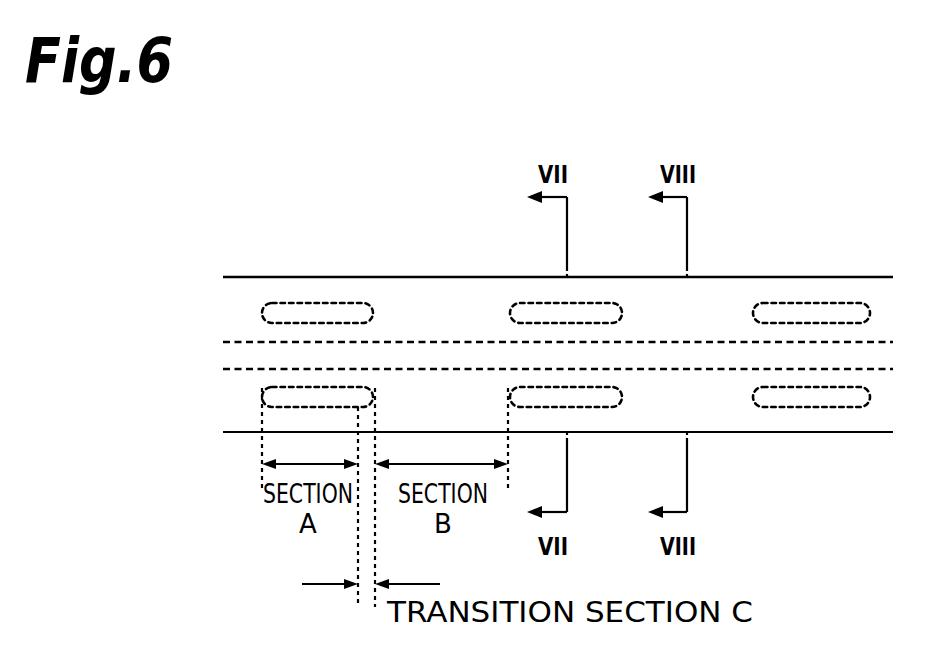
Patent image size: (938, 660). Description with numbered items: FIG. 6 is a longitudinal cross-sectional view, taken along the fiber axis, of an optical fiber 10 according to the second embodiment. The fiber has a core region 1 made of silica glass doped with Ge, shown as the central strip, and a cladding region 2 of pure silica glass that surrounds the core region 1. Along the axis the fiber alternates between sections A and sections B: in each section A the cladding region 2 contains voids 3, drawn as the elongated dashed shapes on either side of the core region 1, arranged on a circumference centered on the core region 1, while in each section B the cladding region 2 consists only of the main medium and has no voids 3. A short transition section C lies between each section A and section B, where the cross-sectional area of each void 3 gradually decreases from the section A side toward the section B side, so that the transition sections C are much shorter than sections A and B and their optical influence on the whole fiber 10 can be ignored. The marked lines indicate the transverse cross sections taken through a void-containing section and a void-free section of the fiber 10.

The core region 1 is at (230, 357).
The cladding region 2 is at (237, 277).
The opening 3 is at (337, 303).
The semiconductor device 10 is at (558, 305).